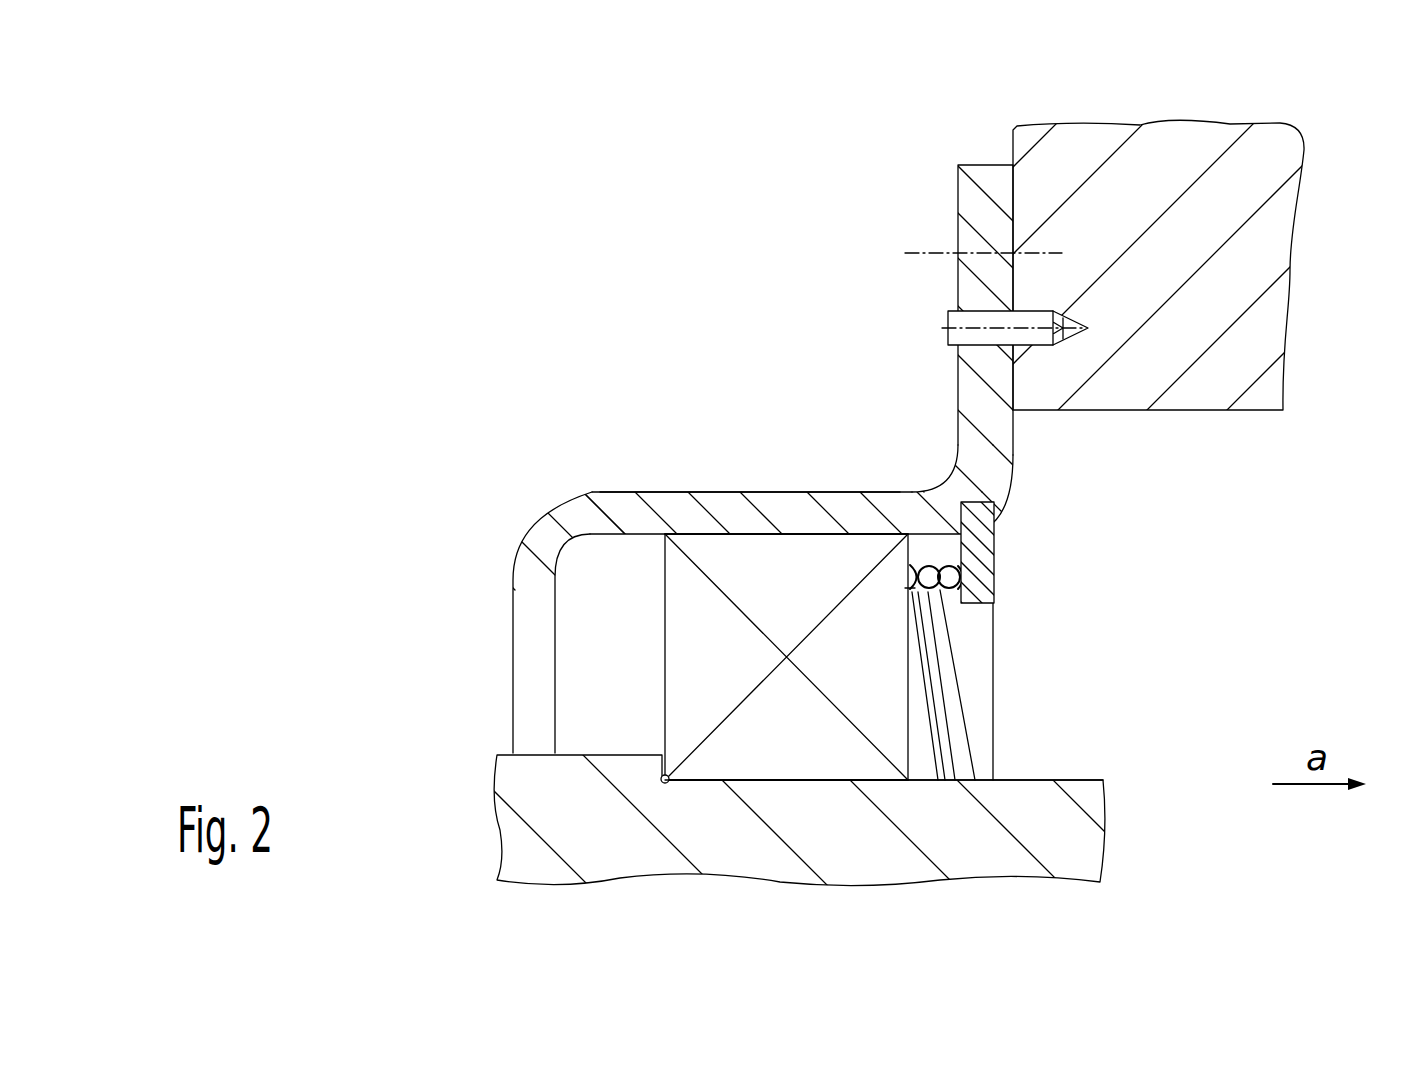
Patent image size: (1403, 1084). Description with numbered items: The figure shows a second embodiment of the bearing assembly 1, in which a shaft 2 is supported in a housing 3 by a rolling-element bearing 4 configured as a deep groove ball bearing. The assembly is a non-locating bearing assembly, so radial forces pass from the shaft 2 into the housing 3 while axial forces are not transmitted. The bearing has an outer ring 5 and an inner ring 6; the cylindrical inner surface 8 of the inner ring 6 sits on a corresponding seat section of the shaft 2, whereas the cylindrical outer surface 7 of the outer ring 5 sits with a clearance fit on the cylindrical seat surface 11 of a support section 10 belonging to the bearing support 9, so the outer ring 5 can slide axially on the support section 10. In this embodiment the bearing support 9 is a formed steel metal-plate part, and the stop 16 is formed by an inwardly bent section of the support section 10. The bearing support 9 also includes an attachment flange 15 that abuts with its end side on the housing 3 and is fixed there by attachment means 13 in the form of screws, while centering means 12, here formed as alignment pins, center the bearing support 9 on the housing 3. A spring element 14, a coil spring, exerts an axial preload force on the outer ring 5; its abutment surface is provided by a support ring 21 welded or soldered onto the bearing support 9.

The bearing assembly 1 is at (500, 200).
The shaft 2 is at (1053, 852).
The housing 3 is at (1265, 220).
The rolling-element bearing 4 is at (720, 655).
The outer ring 5 is at (723, 546).
The inner ring 6 is at (707, 760).
The cylindrical outer surface 7 is at (742, 524).
The cylindrical inner surface 8 is at (790, 786).
The bearing support 9 is at (982, 460).
The support section 10 is at (783, 503).
The cylindrical seat surface 11 is at (808, 540).
The centering means 12 is at (1040, 323).
The attachment means 13 is at (930, 251).
The spring element 14 is at (925, 585).
The attachment flange 15 is at (975, 200).
The stop 16 is at (541, 553).
The support ring 21 is at (996, 578).